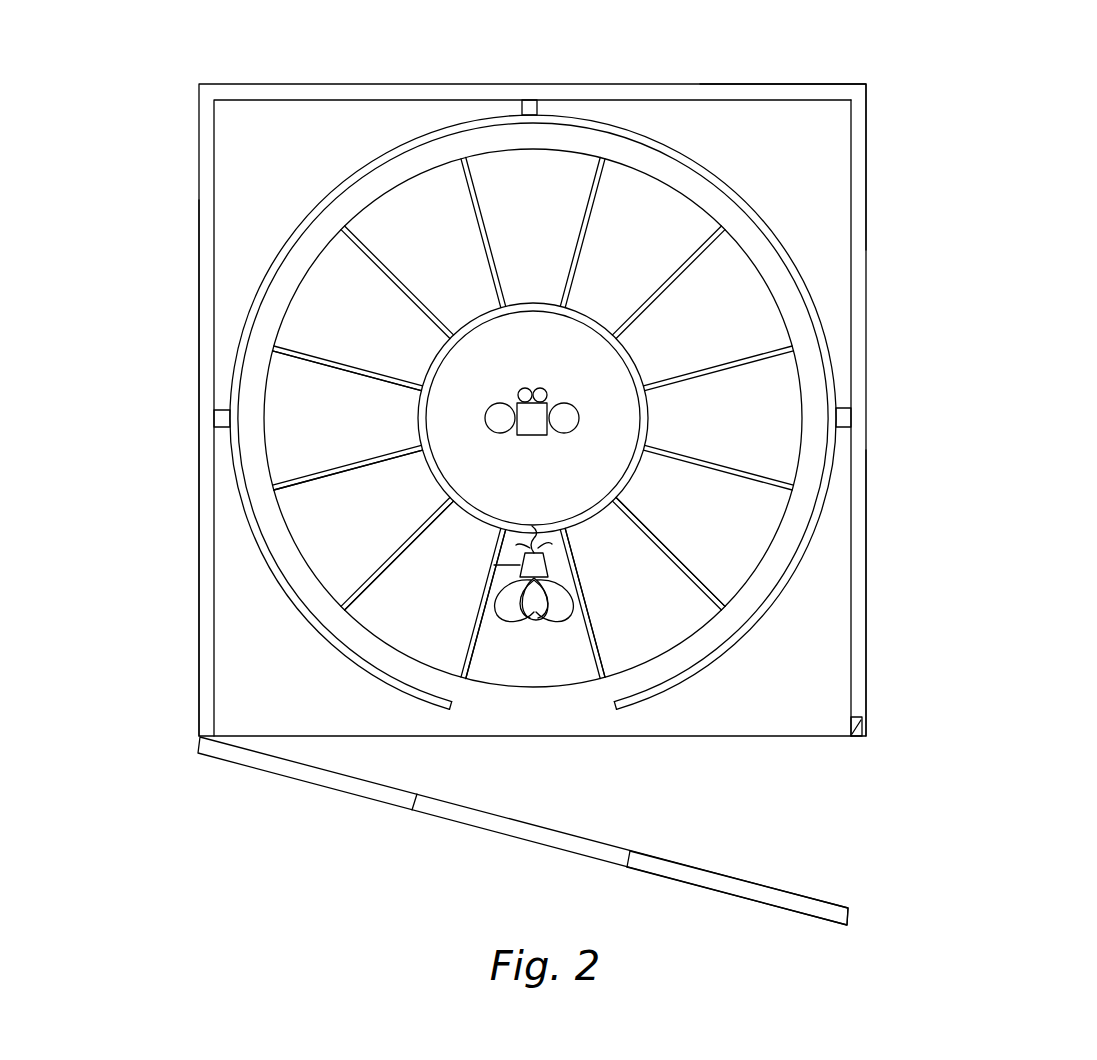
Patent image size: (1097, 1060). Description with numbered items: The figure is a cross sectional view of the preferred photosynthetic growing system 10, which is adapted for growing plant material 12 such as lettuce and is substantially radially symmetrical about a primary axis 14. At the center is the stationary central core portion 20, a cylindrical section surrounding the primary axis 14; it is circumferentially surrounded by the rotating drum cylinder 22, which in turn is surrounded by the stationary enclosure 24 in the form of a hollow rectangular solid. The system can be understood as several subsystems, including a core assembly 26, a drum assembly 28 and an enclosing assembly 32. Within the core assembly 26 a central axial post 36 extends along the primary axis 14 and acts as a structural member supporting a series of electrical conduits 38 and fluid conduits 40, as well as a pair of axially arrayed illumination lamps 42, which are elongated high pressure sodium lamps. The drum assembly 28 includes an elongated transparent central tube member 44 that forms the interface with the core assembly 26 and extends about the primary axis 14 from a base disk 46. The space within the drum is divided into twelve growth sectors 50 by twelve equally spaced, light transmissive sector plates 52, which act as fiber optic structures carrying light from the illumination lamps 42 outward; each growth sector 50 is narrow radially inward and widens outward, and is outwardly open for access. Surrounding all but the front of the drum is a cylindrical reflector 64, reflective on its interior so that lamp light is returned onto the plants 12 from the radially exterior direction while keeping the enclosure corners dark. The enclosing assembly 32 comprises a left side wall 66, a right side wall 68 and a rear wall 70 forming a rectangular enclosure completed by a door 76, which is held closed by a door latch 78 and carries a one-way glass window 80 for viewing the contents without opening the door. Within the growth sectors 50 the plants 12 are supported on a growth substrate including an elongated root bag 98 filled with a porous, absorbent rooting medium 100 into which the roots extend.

The photosynthetic growing system 10 is at (509, 70).
The plant material 12 is at (538, 610).
The primary axis 14 is at (516, 425).
The central core portion 20 is at (555, 506).
The rotating drum cylinder 22 is at (690, 335).
The stationary enclosure 24 is at (858, 220).
The core assembly 26 is at (532, 350).
The drum assembly 28 is at (533, 364).
The enclosing assembly 32 is at (754, 74).
The central axial post 36 is at (538, 432).
The electrical conduits 38 is at (545, 392).
The fluid conduits 40 is at (519, 392).
The illumination lamps 42 is at (490, 417).
The central tube member 44 is at (577, 310).
The base disk 46 is at (339, 441).
The growth sectors 50 is at (388, 534).
The sector plates 52 is at (683, 380).
The cylindrical reflector 64 is at (698, 170).
The left side wall 66 is at (198, 332).
The right side wall 68 is at (858, 565).
The rear wall 70 is at (234, 98).
The door 76 is at (710, 878).
The door latch 78 is at (862, 725).
The window 80 is at (480, 810).
The root bag 98 is at (548, 572).
The rooting medium 100 is at (555, 535).